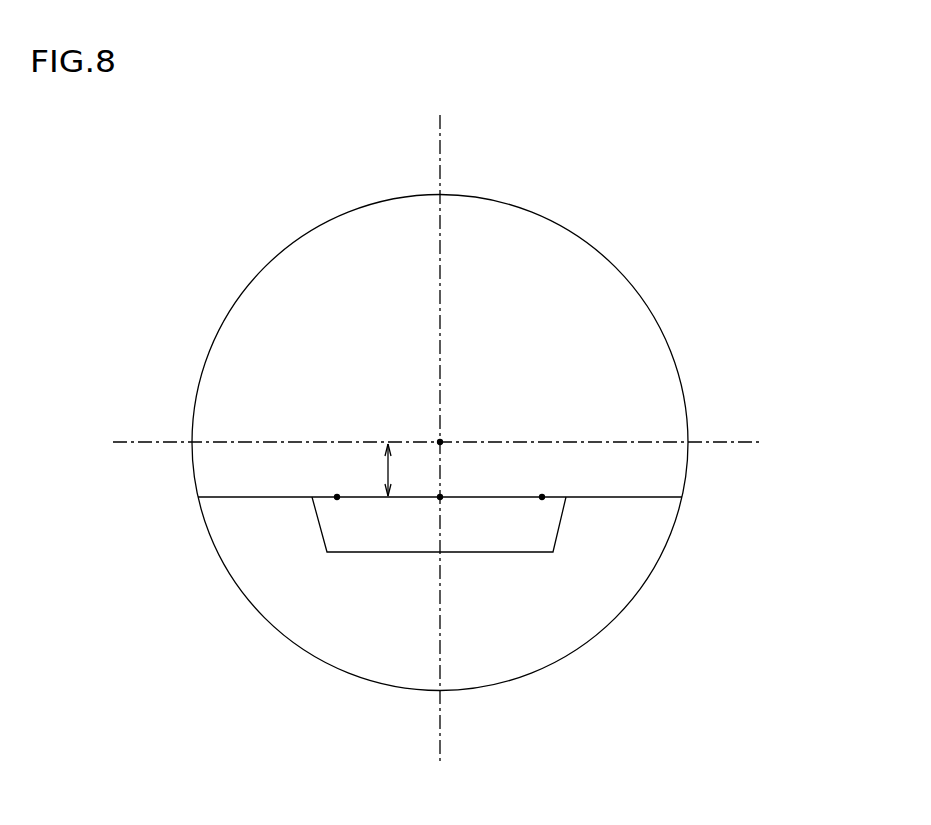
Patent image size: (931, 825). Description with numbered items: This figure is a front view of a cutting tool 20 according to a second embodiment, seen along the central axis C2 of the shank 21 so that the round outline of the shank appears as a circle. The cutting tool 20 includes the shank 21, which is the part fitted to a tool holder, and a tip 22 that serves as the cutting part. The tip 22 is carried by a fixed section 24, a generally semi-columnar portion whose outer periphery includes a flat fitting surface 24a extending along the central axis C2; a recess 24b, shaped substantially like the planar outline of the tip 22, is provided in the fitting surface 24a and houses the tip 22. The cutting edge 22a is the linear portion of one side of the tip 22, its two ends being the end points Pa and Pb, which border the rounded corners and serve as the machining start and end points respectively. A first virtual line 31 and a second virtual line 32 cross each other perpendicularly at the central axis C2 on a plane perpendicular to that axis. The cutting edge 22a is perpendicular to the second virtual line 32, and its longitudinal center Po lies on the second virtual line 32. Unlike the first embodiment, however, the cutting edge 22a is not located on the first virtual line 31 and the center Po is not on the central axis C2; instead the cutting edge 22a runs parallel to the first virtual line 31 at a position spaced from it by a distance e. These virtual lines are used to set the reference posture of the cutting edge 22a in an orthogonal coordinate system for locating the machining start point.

The cutting tool 20 is at (470, 403).
The shank 21 is at (638, 594).
The tip 22 is at (378, 537).
The cutting edge 22a is at (493, 497).
The fixed section 24 is at (470, 446).
The fitting surface 24a is at (248, 497).
The recess 24b is at (480, 548).
The first virtual line 31 is at (727, 442).
The second virtual line 32 is at (440, 157).
The central axis C2 is at (440, 442).
The end point Pa is at (542, 497).
The end point Pb is at (337, 497).
The center of the cutting edge Po is at (440, 497).
The distance e is at (377, 470).